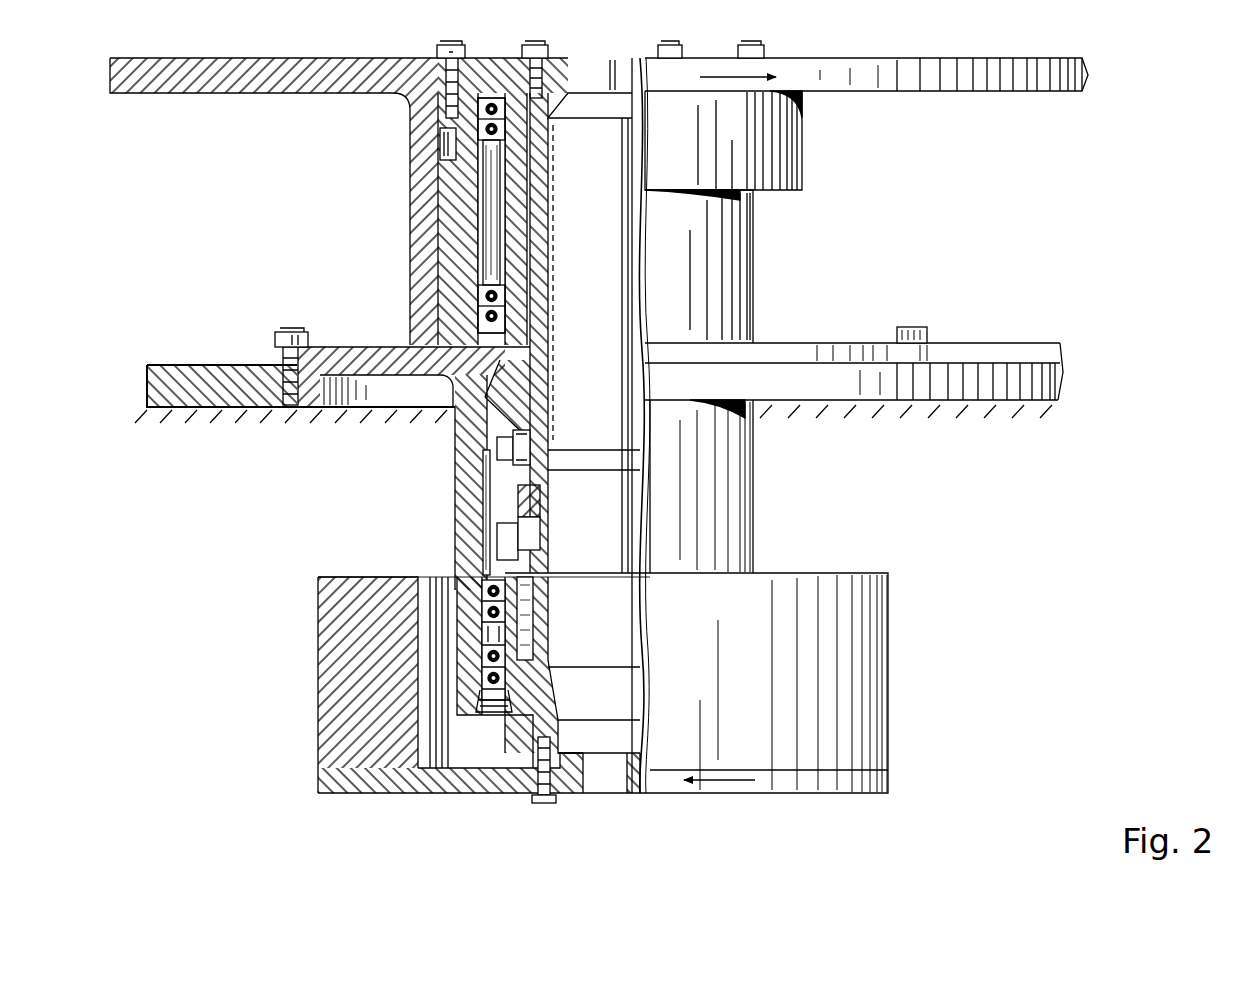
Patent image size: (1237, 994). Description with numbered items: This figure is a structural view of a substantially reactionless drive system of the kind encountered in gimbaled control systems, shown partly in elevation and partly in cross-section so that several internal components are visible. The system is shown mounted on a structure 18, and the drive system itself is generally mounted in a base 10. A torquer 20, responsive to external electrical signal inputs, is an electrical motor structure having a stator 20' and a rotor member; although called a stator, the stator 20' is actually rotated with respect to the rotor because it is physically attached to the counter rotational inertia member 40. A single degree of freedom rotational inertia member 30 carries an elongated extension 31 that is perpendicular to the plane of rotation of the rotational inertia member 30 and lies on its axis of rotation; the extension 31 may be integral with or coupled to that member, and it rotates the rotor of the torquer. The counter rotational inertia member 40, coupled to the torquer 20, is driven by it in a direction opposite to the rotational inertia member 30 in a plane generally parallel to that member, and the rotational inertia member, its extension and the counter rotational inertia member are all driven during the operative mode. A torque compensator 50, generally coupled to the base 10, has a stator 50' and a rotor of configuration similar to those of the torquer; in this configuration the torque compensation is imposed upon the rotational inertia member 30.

The base 10 is at (319, 347).
The structure 18 is at (178, 365).
The torquer 20 is at (466, 504).
The stator 20' is at (455, 542).
The rotational inertia member 30 is at (163, 93).
The extension 31 is at (598, 404).
The counter rotational inertia member 40 is at (368, 795).
The torque compensator 50 is at (451, 512).
The stator 50' is at (452, 446).